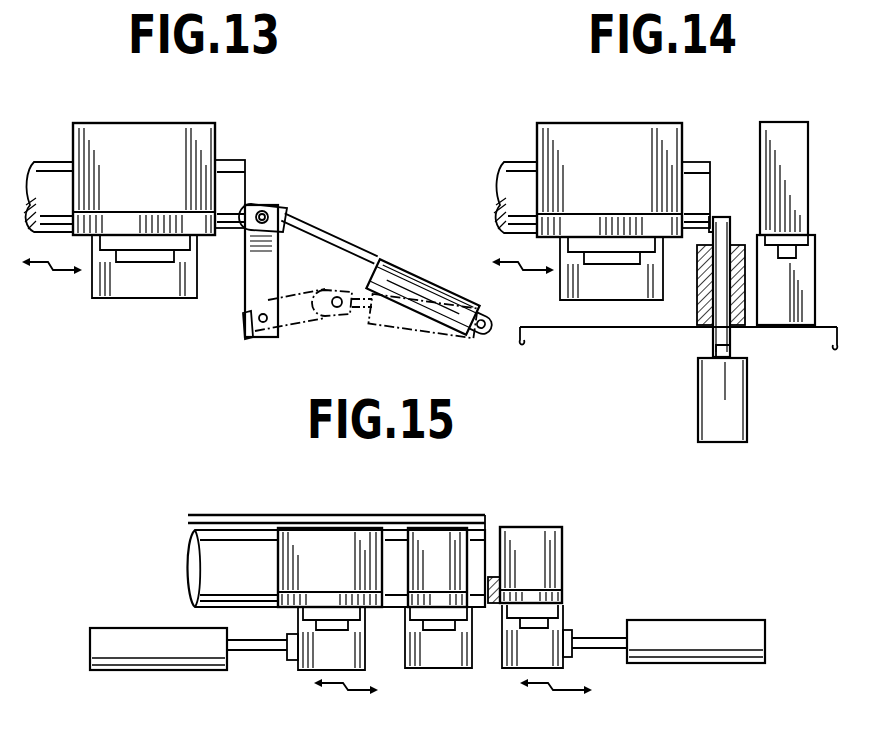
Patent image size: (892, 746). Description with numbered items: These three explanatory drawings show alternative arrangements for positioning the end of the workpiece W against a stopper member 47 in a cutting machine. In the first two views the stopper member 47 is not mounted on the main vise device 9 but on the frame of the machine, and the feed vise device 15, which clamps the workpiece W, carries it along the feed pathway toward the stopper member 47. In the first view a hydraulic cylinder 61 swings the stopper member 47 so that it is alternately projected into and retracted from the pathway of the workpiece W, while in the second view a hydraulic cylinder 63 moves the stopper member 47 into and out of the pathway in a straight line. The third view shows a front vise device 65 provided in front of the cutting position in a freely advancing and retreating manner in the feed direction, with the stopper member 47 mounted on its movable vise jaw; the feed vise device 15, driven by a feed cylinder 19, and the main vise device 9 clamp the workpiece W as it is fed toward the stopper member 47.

In FIG. 13, the workpiece W is at (232, 161).
In FIG. 14, the workpiece W is at (512, 161).
In FIG. 13, the feed vise device 15 is at (151, 186).
In FIG. 14, the feed vise device 15 is at (615, 186).
In FIG. 15, the feed vise device 15 is at (304, 676).
In FIG. 13, the stopper member 47 is at (246, 283).
In FIG. 14, the stopper member 47 is at (718, 214).
In FIG. 15, the stopper member 47 is at (494, 575).
In FIG. 13, the hydraulic cylinder 61 is at (400, 268).
In FIG. 14, the main vise device 9 is at (769, 121).
In FIG. 15, the main vise device 9 is at (430, 671).
In FIG. 14, the hydraulic cylinder 63 is at (749, 415).
In FIG. 15, the feed cylinder 19 is at (108, 636).
In FIG. 15, the front vise device 65 is at (553, 524).